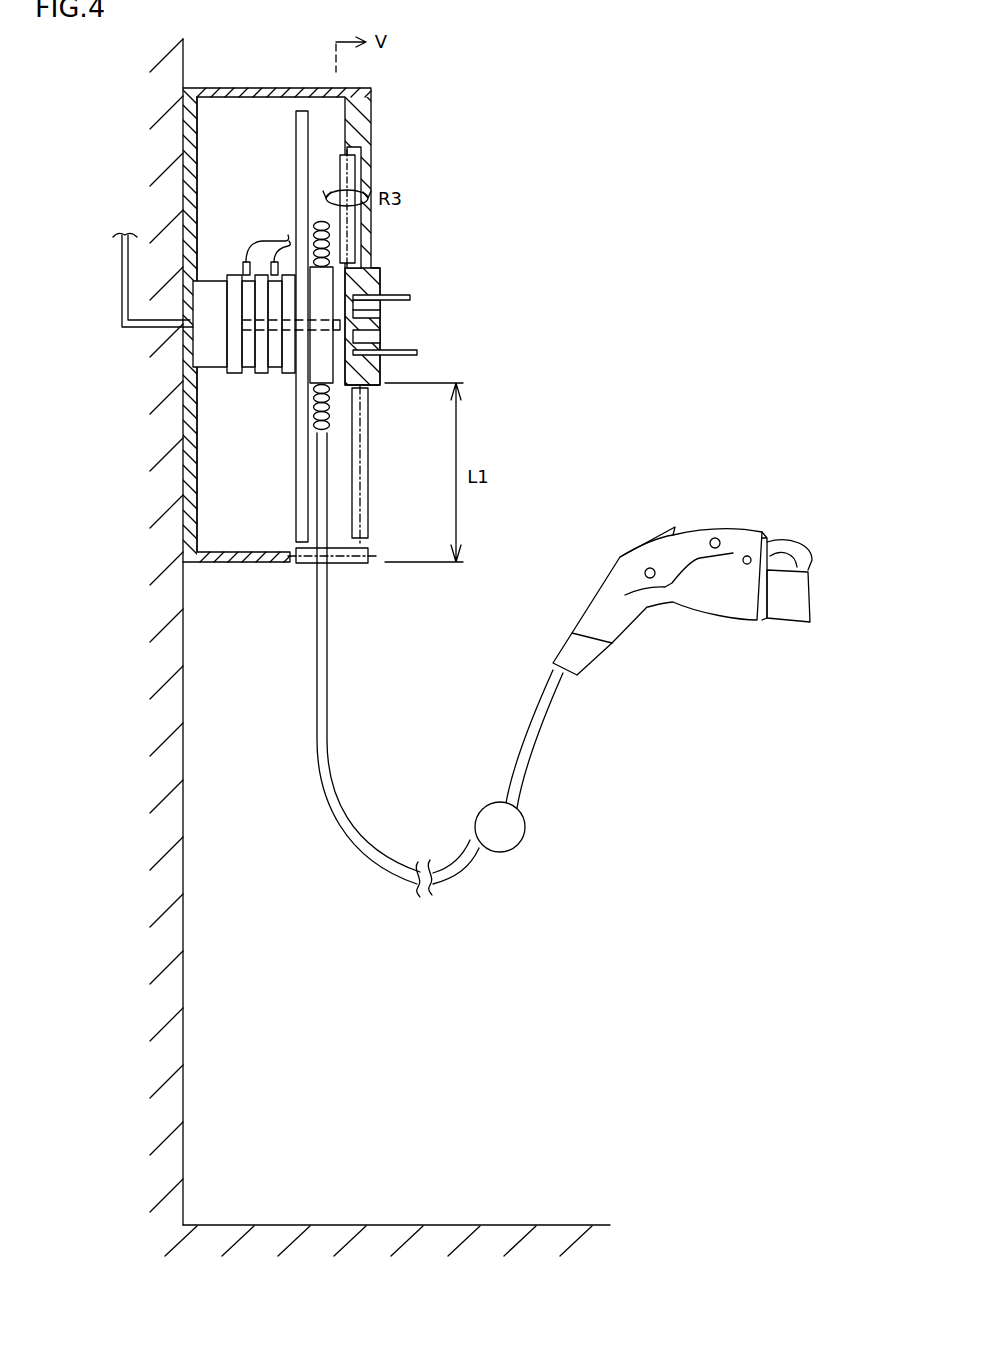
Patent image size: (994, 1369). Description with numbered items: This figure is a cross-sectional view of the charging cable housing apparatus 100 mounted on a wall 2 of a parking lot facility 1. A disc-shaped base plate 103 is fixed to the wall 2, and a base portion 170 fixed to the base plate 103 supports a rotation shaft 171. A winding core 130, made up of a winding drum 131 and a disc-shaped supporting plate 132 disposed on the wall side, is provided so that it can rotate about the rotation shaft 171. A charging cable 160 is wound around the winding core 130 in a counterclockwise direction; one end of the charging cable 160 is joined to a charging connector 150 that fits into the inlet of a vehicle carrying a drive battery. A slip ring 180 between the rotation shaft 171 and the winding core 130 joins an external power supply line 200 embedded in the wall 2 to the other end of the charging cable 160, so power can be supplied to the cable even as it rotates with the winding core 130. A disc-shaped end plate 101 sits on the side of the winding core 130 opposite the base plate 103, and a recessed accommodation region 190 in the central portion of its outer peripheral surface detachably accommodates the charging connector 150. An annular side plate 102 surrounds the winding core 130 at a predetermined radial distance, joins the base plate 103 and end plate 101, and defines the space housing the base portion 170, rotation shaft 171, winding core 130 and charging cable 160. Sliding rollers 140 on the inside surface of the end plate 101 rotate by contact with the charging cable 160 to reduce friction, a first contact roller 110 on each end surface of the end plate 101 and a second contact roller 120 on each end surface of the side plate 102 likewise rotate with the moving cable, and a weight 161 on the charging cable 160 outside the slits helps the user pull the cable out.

The parking lot facility 1 is at (567, 1225).
The wall 2 is at (183, 693).
The charging cable housing apparatus 100 is at (675, 815).
The end plate 101 is at (358, 124).
The side plate 102 is at (286, 88).
The base plate 103 is at (190, 152).
The first contact roller 110 is at (365, 498).
The second contact roller 120 is at (355, 563).
The winding core 130 is at (420, 322).
The winding drum 131 is at (323, 343).
The supporting plate 132 is at (303, 368).
The sliding roller 140 is at (353, 170).
The charging connector 150 is at (717, 600).
The charging cable 160 is at (378, 860).
The weight 161 is at (512, 830).
The base portion 170 is at (203, 342).
The rotation shaft 171 is at (338, 318).
The slip ring 180 is at (262, 362).
The recessed accommodation region 190 is at (380, 312).
The external power supply line 200 is at (122, 270).